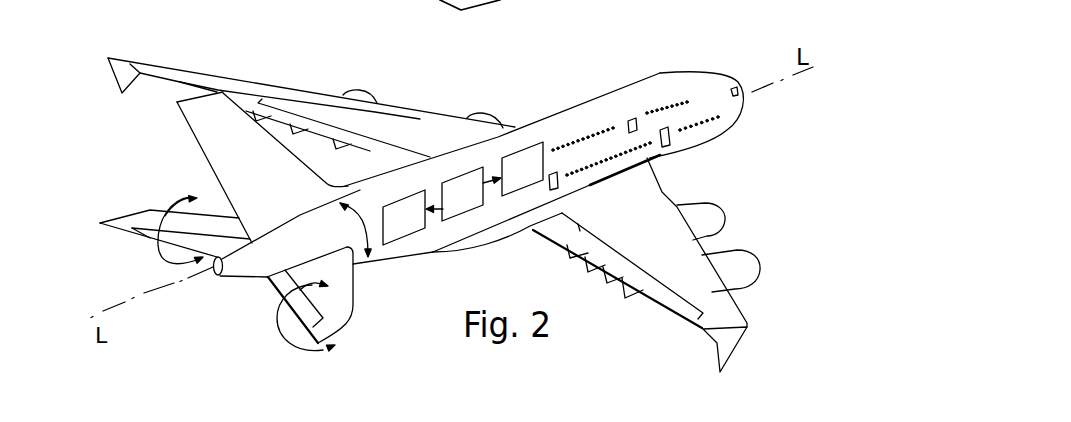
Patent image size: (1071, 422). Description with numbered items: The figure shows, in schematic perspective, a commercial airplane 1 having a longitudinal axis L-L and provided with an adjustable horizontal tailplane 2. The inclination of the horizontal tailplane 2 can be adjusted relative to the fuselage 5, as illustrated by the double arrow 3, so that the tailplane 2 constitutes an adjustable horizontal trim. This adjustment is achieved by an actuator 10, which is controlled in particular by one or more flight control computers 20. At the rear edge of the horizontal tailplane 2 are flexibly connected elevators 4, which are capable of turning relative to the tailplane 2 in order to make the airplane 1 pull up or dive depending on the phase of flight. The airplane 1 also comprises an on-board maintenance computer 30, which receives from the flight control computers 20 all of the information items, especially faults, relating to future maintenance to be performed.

The airplane 1 is at (514, 56).
The horizontal tailplane 2 is at (217, 218).
The double arrow 3 is at (360, 226).
The elevators 4 is at (150, 213).
The fuselage 5 is at (157, 263).
The actuator 10 is at (417, 230).
The flight control computers 20 is at (476, 206).
The on-board maintenance computer 30 is at (536, 181).